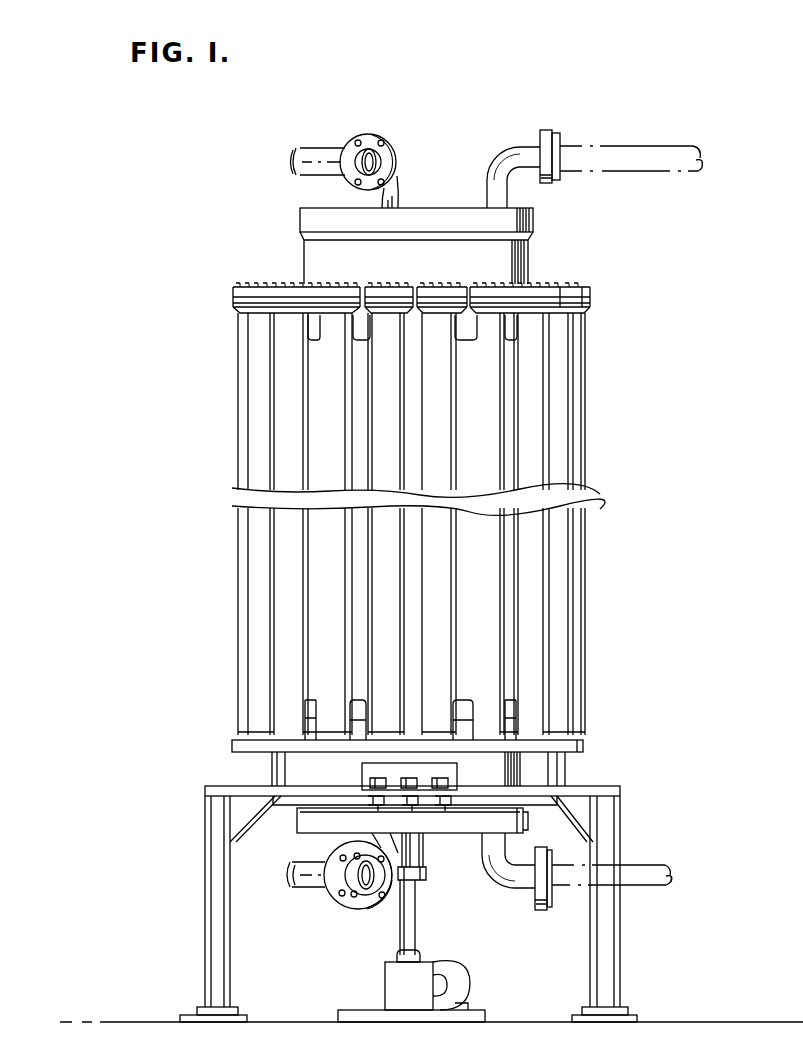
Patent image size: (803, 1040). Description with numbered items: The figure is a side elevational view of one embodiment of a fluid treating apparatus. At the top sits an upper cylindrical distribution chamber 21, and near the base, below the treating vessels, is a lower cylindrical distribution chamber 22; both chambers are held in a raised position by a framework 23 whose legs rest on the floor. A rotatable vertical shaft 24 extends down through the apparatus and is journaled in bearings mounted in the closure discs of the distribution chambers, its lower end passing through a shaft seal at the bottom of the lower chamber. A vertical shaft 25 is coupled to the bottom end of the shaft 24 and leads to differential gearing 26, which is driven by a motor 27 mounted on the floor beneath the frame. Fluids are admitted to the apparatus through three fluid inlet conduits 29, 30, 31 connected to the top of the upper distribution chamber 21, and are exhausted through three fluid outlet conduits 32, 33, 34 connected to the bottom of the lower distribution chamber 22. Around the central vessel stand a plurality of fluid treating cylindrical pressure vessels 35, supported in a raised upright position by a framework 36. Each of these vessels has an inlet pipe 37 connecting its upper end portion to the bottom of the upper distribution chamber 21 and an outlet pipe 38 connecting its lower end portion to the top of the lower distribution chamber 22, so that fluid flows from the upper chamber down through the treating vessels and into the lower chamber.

The upper cylindrical distribution chamber 21 is at (550, 261).
The lower cylindrical distribution chamber 22 is at (539, 779).
The framework 23 is at (194, 857).
The rotatable vertical shaft 24 is at (421, 866).
The vertical shaft 25 is at (416, 921).
The differential gearing 26 is at (385, 980).
The motor 27 is at (458, 986).
The fluid inlet conduit 29 is at (498, 162).
The fluid inlet conduit 30 is at (351, 135).
The fluid inlet conduit 31 is at (398, 199).
The fluid outlet conduit 32 is at (501, 890).
The fluid outlet conduit 33 is at (336, 903).
The fluid outlet conduit 34 is at (383, 909).
The fluid treating cylindrical pressure vessels 35 is at (295, 388).
The framework 36 is at (217, 750).
The inlet pipe 37 is at (318, 330).
The outlet pipe 38 is at (359, 722).